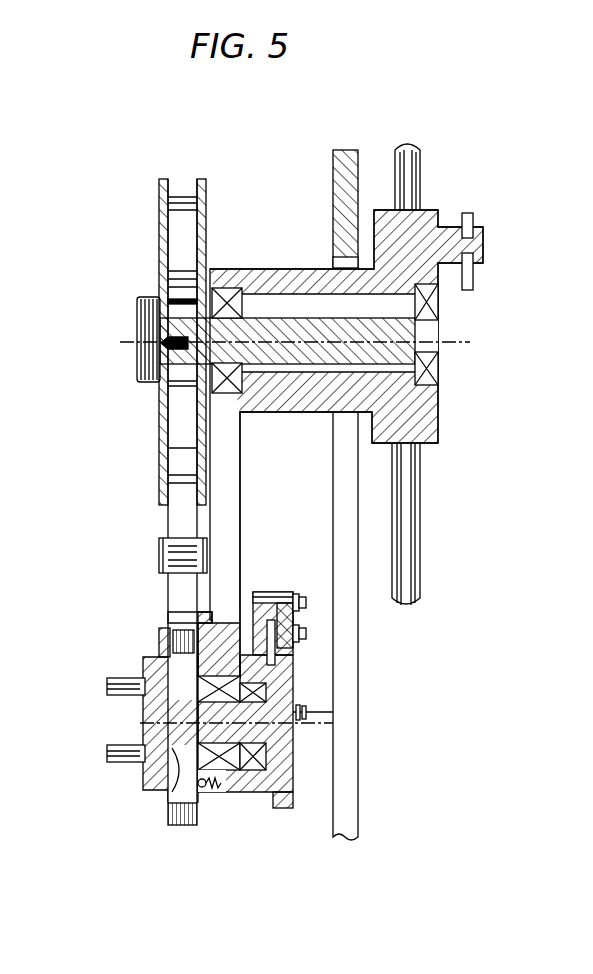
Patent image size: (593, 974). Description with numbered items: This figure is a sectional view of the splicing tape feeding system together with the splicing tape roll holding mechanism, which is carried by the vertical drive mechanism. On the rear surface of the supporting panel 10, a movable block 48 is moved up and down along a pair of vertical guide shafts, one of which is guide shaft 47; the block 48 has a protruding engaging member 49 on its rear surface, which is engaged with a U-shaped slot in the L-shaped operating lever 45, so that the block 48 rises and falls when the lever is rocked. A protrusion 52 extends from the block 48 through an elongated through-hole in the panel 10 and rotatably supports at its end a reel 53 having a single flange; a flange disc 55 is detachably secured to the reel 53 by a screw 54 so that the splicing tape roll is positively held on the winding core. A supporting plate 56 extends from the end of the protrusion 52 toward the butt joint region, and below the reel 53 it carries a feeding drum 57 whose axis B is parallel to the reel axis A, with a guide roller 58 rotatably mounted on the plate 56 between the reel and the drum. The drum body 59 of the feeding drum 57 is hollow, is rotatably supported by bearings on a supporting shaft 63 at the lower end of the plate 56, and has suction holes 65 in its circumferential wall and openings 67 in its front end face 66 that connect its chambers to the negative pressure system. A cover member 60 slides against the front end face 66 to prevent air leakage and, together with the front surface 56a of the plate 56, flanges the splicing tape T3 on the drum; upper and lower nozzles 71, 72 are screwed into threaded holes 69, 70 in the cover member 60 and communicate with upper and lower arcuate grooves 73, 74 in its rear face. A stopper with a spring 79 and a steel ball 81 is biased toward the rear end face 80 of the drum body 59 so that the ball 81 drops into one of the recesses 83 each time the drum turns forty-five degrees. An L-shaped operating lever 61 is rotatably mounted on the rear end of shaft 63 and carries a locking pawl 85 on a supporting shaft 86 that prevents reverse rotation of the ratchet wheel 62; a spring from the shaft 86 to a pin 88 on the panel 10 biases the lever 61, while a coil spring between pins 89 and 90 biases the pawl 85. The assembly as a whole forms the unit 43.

The drive head assembly 43 is at (280, 120).
The operating lever 45 is at (472, 222).
The vertical guide shaft 47 is at (413, 168).
The movable block 48 is at (425, 227).
The engaging member 49 is at (448, 243).
The supporting panel 10 is at (340, 192).
The protrusion 52 is at (301, 280).
The reel 53 is at (212, 322).
The screw 54 is at (141, 323).
The flange disc 55 is at (163, 200).
The splicing tape T3 is at (176, 434).
The supporting plate 56 is at (232, 457).
The front surface of the supporting plate 56a is at (200, 624).
The feeding drum 57 is at (63, 635).
The guide roller 58 is at (168, 548).
The drum body 59 is at (186, 633).
The cover member 60 is at (164, 634).
The L-shaped operating lever 61 is at (246, 640).
The ratchet wheel 62 is at (281, 685).
The supporting shaft of the drum body 63 is at (270, 745).
The suction holes 65 is at (182, 827).
The front end face of the drum body 66 is at (160, 807).
The openings 67 is at (172, 793).
The threaded hole 69 is at (148, 664).
The threaded hole 70 is at (146, 733).
The upper nozzle 71 is at (112, 689).
The lower nozzle 72 is at (112, 761).
The upper arcuate groove 73 is at (150, 704).
The lower arcuate groove 74 is at (157, 776).
The spring 79 is at (265, 811).
The rear end face of the drum body 80 is at (206, 814).
The steel ball 81 is at (210, 797).
The recesses 83 is at (170, 812).
The locking pawl 85 is at (284, 593).
The supporting shaft 86 is at (306, 599).
The pin 88 is at (333, 718).
The pin 89 is at (308, 632).
The pin 90 is at (306, 653).
The axis A is at (447, 346).
The axis B is at (300, 729).